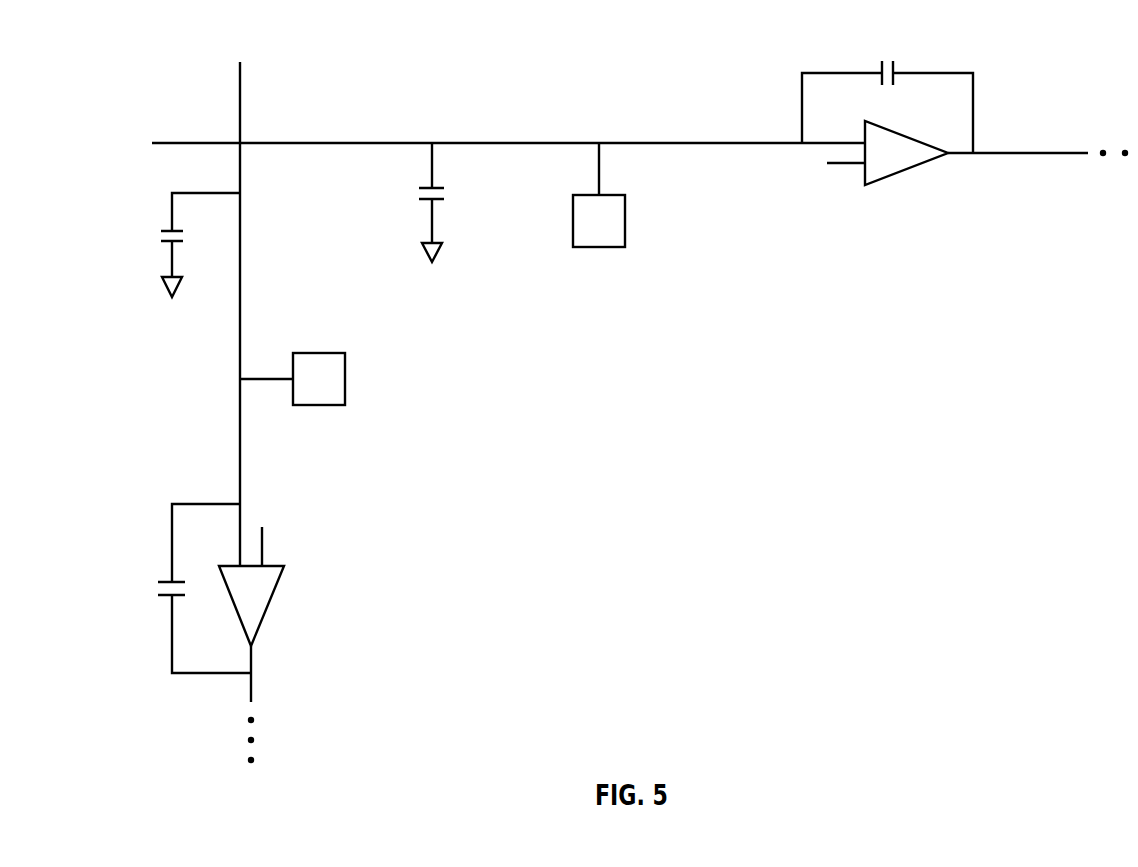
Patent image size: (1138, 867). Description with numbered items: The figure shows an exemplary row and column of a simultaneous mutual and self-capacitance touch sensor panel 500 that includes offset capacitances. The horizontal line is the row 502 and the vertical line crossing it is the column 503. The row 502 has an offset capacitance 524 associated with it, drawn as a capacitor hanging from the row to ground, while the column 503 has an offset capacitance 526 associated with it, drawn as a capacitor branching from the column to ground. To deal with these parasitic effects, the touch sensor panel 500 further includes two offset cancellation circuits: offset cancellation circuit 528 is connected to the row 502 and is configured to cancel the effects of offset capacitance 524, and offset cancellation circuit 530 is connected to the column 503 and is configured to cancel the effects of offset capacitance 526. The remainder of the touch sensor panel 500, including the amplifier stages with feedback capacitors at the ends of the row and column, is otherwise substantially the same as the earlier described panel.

The touch sensor panel 500 is at (128, 67).
The row 502 is at (214, 142).
The column 503 is at (241, 96).
The offset capacitance 524 is at (427, 183).
The offset capacitance 526 is at (165, 228).
The offset cancellation circuit 528 is at (599, 247).
The offset cancellation circuit 530 is at (318, 353).